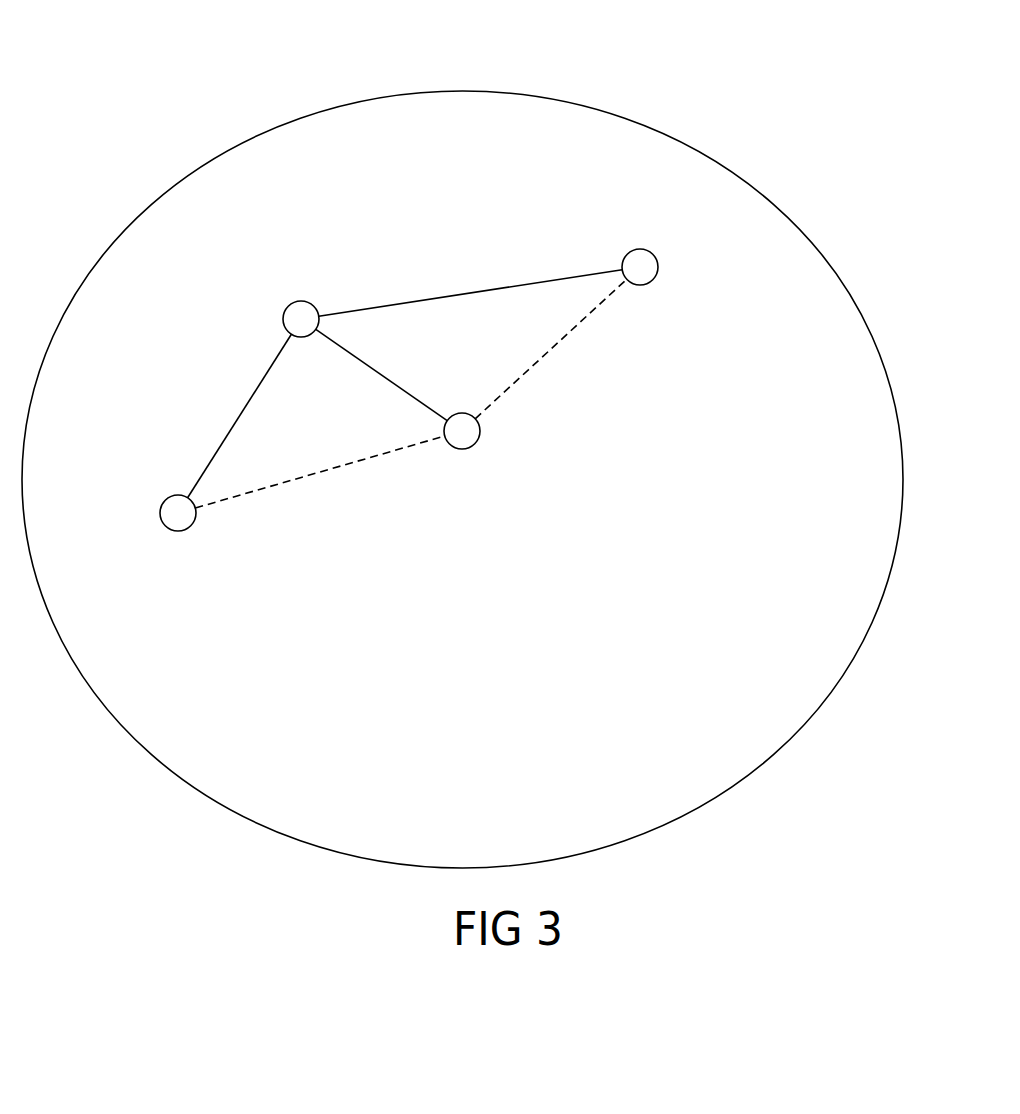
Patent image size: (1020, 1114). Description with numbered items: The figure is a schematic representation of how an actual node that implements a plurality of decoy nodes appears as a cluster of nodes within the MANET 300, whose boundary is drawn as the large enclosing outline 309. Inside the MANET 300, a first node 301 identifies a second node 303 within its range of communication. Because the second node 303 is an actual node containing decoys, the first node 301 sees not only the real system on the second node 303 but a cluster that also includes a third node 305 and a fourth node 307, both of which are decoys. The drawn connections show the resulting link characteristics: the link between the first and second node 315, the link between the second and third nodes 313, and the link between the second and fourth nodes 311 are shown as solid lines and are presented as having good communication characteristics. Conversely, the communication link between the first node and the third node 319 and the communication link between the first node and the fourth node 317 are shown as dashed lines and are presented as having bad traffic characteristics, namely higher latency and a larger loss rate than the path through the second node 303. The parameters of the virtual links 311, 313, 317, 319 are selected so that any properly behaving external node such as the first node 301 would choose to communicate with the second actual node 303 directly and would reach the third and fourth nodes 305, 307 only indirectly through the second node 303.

The MANET 300 is at (125, 48).
The first node 301 is at (473, 452).
The second node 303 is at (293, 302).
The third node 305 is at (175, 532).
The fourth node 307 is at (625, 252).
The network boundary 309 is at (366, 97).
The link between the second and fourth nodes 311 is at (422, 288).
The link between the second and third nodes 313 is at (256, 378).
The link between the first and second node 315 is at (405, 385).
The communication link between the first node and the fourth node 317 is at (530, 377).
The communication link between the first node and the third node 319 is at (312, 470).